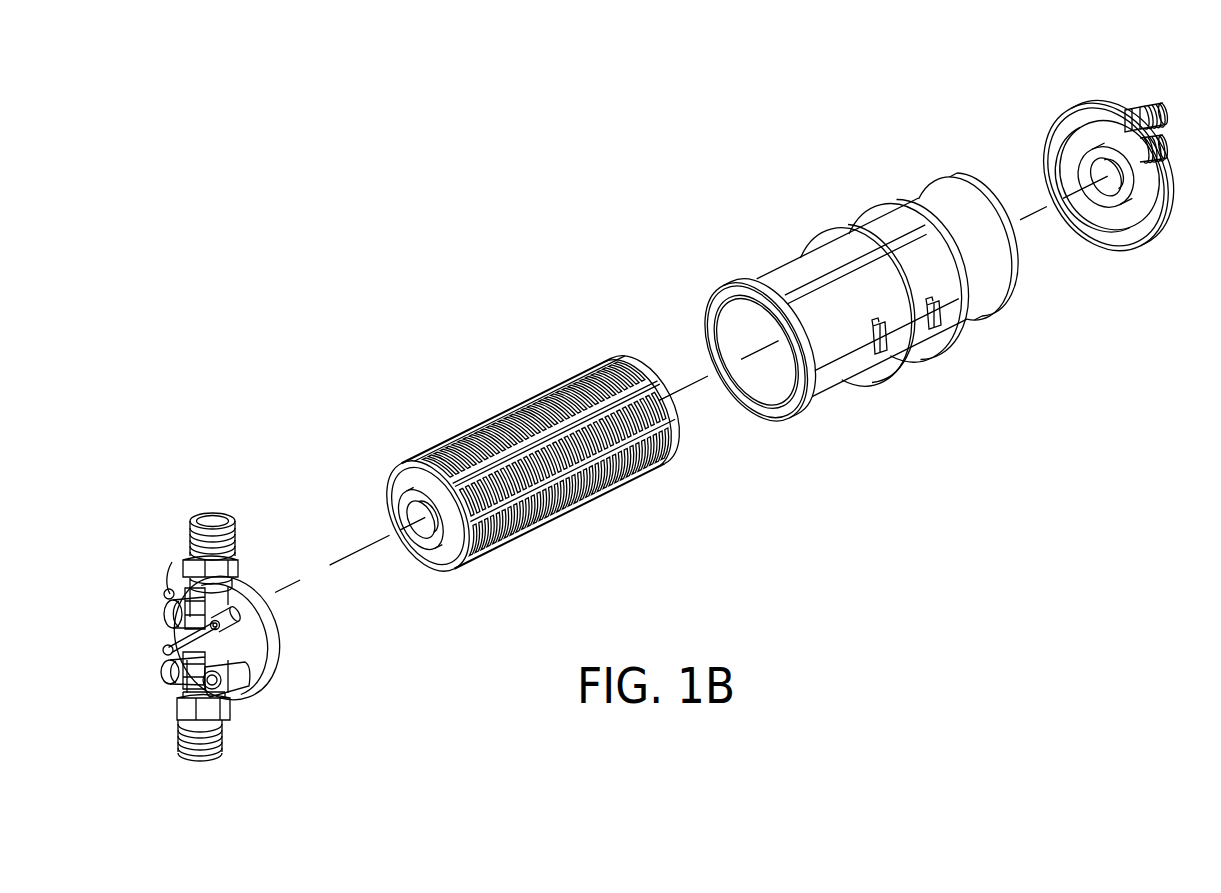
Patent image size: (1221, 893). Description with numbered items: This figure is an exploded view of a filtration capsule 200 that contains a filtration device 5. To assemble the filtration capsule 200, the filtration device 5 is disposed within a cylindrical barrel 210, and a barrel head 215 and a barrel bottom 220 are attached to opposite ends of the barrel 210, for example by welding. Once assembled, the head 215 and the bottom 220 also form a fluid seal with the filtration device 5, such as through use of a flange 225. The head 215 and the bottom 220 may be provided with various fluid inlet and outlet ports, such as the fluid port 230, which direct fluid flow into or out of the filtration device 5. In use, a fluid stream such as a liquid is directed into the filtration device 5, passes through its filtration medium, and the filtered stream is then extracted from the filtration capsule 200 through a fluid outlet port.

The filtration capsule 200 is at (490, 281).
The filtration device 5 is at (560, 506).
The cylindrical barrel 210 is at (907, 341).
The barrel bottom 220 is at (1086, 106).
The flange 225 is at (1121, 193).
The fluid port 230 is at (236, 538).
The barrel head 215 is at (244, 677).